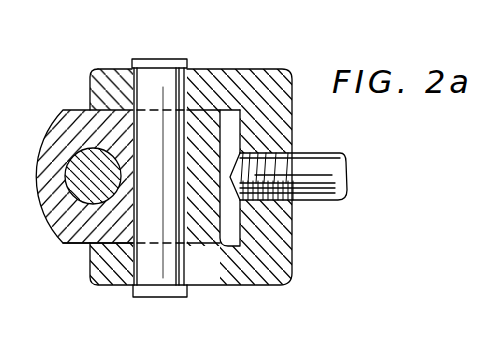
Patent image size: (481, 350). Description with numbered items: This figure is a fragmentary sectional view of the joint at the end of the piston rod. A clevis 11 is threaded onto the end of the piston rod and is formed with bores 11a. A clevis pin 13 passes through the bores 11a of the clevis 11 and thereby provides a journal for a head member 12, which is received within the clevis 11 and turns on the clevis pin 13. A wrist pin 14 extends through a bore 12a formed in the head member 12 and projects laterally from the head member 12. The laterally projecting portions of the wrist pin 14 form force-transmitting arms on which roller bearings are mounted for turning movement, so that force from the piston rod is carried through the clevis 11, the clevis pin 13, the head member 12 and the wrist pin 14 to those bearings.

The clevis 11 is at (240, 76).
The bores 11a is at (190, 84).
The head member 12 is at (74, 110).
The bore 12a is at (72, 194).
The clevis pin 13 is at (189, 276).
The wrist pin 14 is at (70, 169).